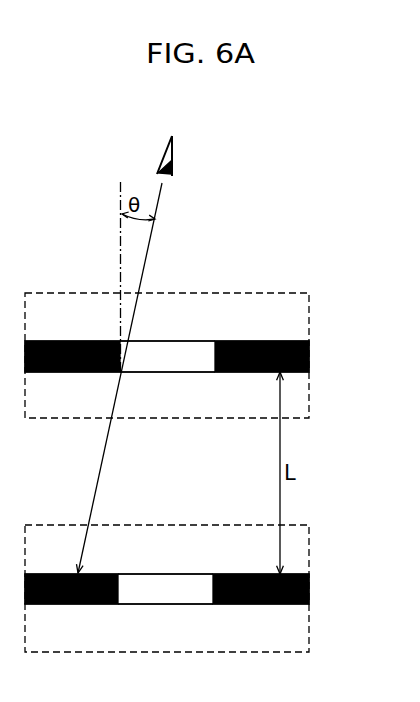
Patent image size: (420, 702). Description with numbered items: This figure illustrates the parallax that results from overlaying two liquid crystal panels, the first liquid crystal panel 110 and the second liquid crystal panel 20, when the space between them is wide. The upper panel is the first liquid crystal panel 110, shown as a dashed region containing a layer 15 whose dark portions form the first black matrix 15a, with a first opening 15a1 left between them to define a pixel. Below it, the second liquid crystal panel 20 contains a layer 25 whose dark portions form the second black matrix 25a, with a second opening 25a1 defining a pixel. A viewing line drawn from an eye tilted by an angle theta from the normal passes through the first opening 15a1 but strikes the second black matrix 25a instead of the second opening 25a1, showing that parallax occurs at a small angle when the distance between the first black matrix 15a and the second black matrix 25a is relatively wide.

The first liquid crystal panel 110 is at (294, 293).
The first barrier layer 15 is at (309, 357).
The first black matrix 15a is at (271, 341).
The first openings 15a1 is at (213, 362).
The second liquid crystal panel 20 is at (293, 525).
The second barrier layer 25 is at (309, 590).
The second black matrix 25a is at (290, 573).
The second openings 25a1 is at (204, 590).